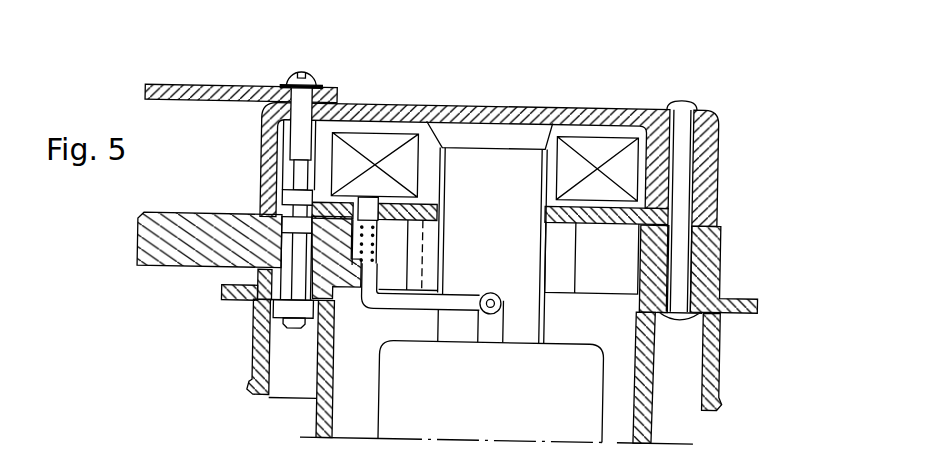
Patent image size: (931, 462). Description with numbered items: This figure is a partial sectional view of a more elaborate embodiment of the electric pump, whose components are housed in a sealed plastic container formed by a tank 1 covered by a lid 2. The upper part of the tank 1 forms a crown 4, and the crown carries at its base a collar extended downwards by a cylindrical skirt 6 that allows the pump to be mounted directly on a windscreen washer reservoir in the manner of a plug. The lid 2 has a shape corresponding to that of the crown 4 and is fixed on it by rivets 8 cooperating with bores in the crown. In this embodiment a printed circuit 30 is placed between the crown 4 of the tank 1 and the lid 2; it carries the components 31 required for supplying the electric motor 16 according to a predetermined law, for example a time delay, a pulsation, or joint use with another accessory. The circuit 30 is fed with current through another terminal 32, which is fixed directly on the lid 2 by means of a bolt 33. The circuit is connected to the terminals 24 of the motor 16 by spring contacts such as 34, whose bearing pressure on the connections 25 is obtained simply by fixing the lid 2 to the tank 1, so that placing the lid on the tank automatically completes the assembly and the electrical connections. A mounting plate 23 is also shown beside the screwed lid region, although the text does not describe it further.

The tank 1 is at (328, 402).
The lid 2 is at (709, 153).
The crown 4 is at (708, 255).
The cylindrical skirt 6 is at (716, 363).
The rivet 8 is at (685, 116).
The electric motor 16 is at (507, 407).
The mounting plate 23 is at (165, 234).
The terminal 24 is at (491, 325).
The connection 25 is at (456, 300).
The printed circuit 30 is at (602, 207).
The component 31 is at (371, 142).
The terminal 32 is at (168, 89).
The bolt 33 is at (290, 77).
The spring contact 34 is at (377, 237).